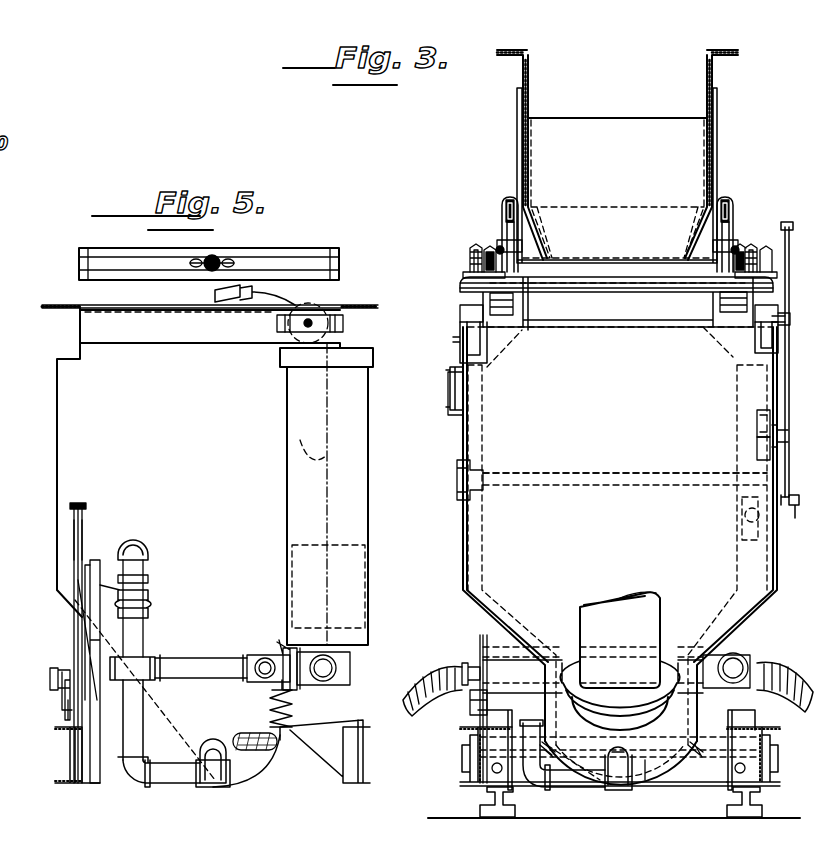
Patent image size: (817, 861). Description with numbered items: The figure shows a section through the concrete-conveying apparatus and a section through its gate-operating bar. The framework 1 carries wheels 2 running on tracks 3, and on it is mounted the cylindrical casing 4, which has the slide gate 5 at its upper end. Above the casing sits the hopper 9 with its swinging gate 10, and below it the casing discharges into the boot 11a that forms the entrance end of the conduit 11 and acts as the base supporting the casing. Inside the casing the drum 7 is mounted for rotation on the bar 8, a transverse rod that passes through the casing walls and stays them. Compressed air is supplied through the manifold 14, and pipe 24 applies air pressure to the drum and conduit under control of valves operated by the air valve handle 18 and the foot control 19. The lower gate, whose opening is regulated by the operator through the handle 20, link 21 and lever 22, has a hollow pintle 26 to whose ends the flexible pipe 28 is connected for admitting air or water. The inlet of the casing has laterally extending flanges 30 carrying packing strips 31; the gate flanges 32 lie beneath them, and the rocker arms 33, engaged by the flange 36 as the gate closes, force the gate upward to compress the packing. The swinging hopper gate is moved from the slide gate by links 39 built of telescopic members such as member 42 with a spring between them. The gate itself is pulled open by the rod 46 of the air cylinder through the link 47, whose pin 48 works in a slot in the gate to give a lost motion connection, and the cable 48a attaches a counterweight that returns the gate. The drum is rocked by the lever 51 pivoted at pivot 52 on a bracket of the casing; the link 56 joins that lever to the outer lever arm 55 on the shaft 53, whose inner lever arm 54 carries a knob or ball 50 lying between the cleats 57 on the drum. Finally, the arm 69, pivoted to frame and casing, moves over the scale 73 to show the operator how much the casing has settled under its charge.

In FIG. 5, the framework 1 is at (60, 777).
In FIG. 3, the framework 1 is at (465, 772).
In FIG. 3, the wheels 2 is at (487, 790).
In FIG. 3, the tracks 3 is at (490, 806).
In FIG. 5, the cylindrical casing 4 is at (57, 474).
In FIG. 3, the cylindrical casing 4 is at (463, 590).
In FIG. 3, the slide gate 5 is at (515, 282).
In FIG. 3, the drum 7 is at (735, 618).
In FIG. 3, the bar 8 is at (578, 483).
In FIG. 3, the hopper 9 is at (522, 70).
In FIG. 3, the swinging gate 10 is at (517, 127).
In FIG. 3, the conduit 11 is at (652, 617).
In FIG. 3, the boot 11a is at (645, 775).
In FIG. 5, the manifold 14 is at (335, 680).
In FIG. 3, the manifold 14 is at (742, 660).
In FIG. 5, the air valve handle 18 is at (118, 570).
In FIG. 5, the foot control 19 is at (247, 737).
In FIG. 5, the handle 20 is at (83, 510).
In FIG. 5, the link 21 is at (73, 526).
In FIG. 3, the link 21 is at (480, 638).
In FIG. 5, the lever 22 is at (70, 703).
In FIG. 3, the lever 22 is at (470, 703).
In FIG. 5, the pipe 24 is at (135, 728).
In FIG. 3, the pipe 24 is at (566, 780).
In FIG. 5, the pintle 26 is at (56, 670).
In FIG. 3, the pintle 26 is at (468, 667).
In FIG. 3, the flexible pipe 28 is at (420, 670).
In FIG. 3, the laterally extending flanges 30 is at (472, 278).
In FIG. 3, the packing strips 31 is at (482, 292).
In FIG. 3, the gate flanges 32 is at (513, 307).
In FIG. 3, the rocker arms 33 is at (462, 325).
In FIG. 3, the flange 36 is at (465, 314).
In FIG. 3, the links 39 is at (506, 188).
In FIG. 3, the telescopic member 42 is at (502, 212).
In FIG. 5, the rod 46 is at (212, 255).
In FIG. 5, the link 47 is at (303, 243).
In FIG. 5, the pin 48 is at (340, 545).
In FIG. 5, the cable 48a is at (308, 494).
In FIG. 3, the knob or ball 50 is at (744, 516).
In FIG. 3, the lever 51 is at (790, 406).
In FIG. 3, the pivot 52 is at (793, 318).
In FIG. 3, the shaft 53 is at (757, 427).
In FIG. 3, the lever arm 54 is at (793, 448).
In FIG. 3, the lever arm 55 is at (752, 458).
In FIG. 3, the link 56 is at (795, 512).
In FIG. 3, the cleats 57 is at (748, 540).
In FIG. 3, the arm 69 is at (452, 404).
In FIG. 3, the scale 73 is at (455, 372).